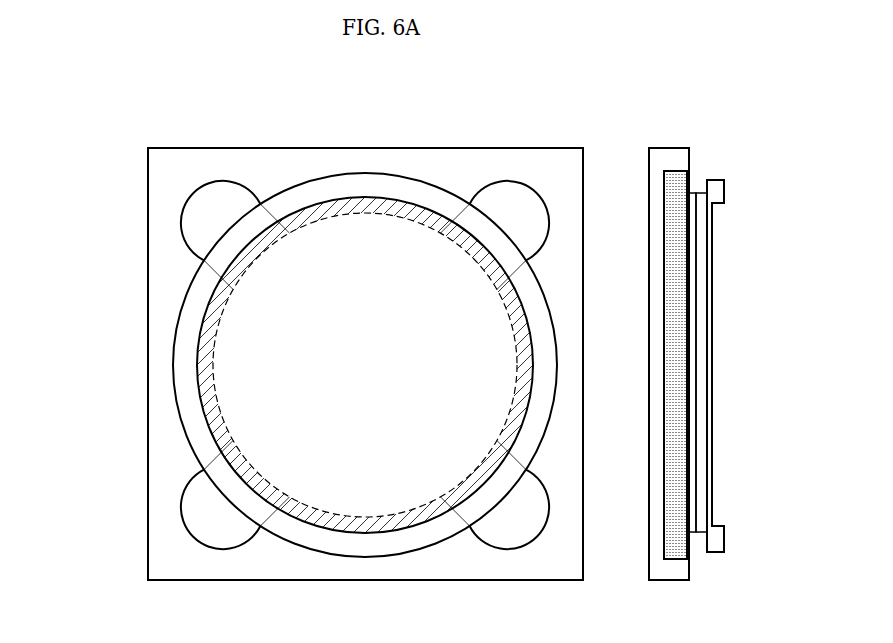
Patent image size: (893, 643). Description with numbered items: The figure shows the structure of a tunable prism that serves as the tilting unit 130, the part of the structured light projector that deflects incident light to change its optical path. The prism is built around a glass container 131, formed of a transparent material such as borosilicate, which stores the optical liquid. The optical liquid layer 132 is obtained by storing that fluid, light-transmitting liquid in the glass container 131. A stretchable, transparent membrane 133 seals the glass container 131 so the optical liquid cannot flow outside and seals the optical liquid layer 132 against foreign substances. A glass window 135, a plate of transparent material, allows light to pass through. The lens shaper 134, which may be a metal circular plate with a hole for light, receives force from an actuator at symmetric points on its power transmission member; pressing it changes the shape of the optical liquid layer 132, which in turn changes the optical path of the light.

The tilting unit 130 is at (70, 83).
The glass container 131 is at (513, 148).
The optical liquid layer 132 is at (363, 185).
The membrane 133 is at (690, 553).
The lens shaper 134 is at (270, 410).
The glass window 135 is at (208, 367).